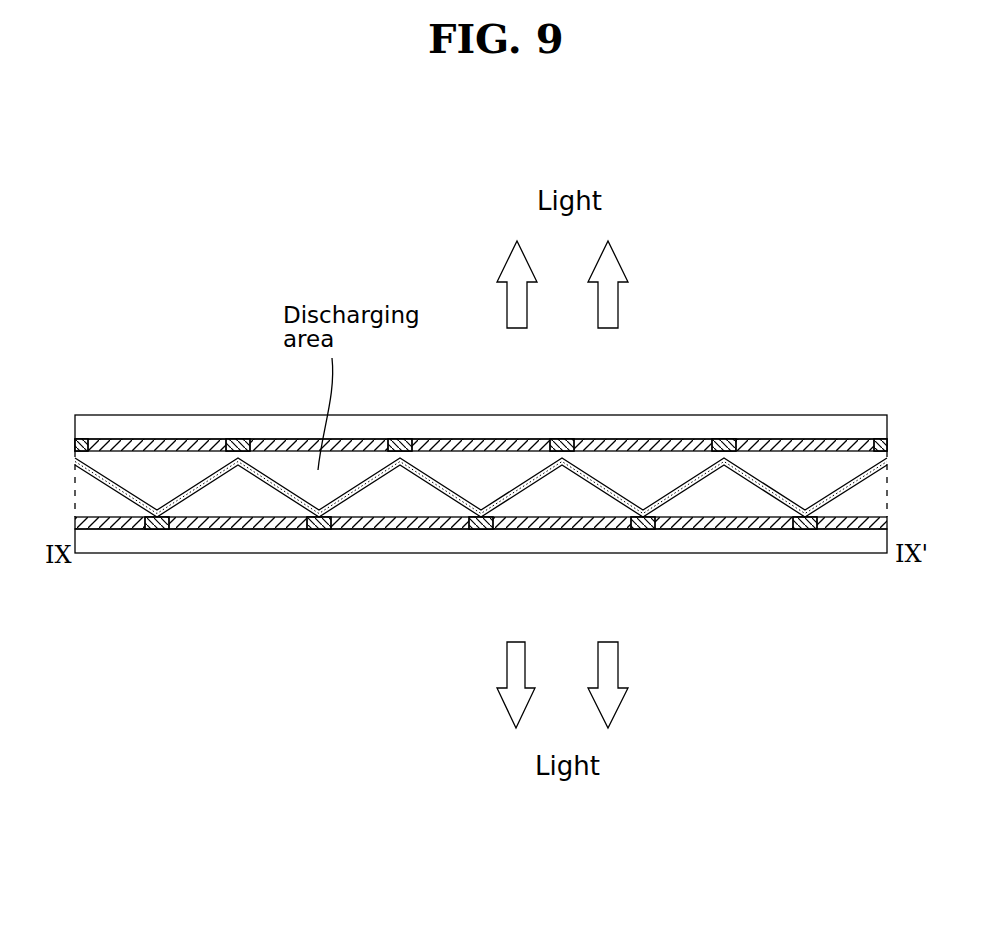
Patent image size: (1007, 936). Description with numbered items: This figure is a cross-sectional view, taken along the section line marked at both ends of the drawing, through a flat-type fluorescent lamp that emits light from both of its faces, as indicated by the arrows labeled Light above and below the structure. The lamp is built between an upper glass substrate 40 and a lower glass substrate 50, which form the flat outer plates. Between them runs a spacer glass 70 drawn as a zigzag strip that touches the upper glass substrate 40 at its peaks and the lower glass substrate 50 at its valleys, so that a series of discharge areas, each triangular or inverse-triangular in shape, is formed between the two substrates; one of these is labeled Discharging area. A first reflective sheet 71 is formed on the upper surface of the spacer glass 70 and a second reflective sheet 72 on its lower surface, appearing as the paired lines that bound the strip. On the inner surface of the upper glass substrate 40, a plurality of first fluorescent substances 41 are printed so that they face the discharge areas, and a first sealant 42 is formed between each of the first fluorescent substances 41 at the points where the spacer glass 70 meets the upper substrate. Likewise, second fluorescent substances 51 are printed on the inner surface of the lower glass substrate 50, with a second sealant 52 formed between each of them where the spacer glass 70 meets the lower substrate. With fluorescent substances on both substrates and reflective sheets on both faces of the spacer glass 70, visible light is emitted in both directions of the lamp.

The upper glass substrate 40 is at (821, 425).
The first fluorescent substances 41 is at (157, 440).
The first sealant 42 is at (238, 441).
The lower glass substrate 50 is at (845, 542).
The second fluorescent substances 51 is at (405, 530).
The second sealant 52 is at (323, 530).
The spacer glass 70 is at (668, 497).
The first reflective sheet 71 is at (686, 470).
The second reflective sheet 72 is at (712, 480).